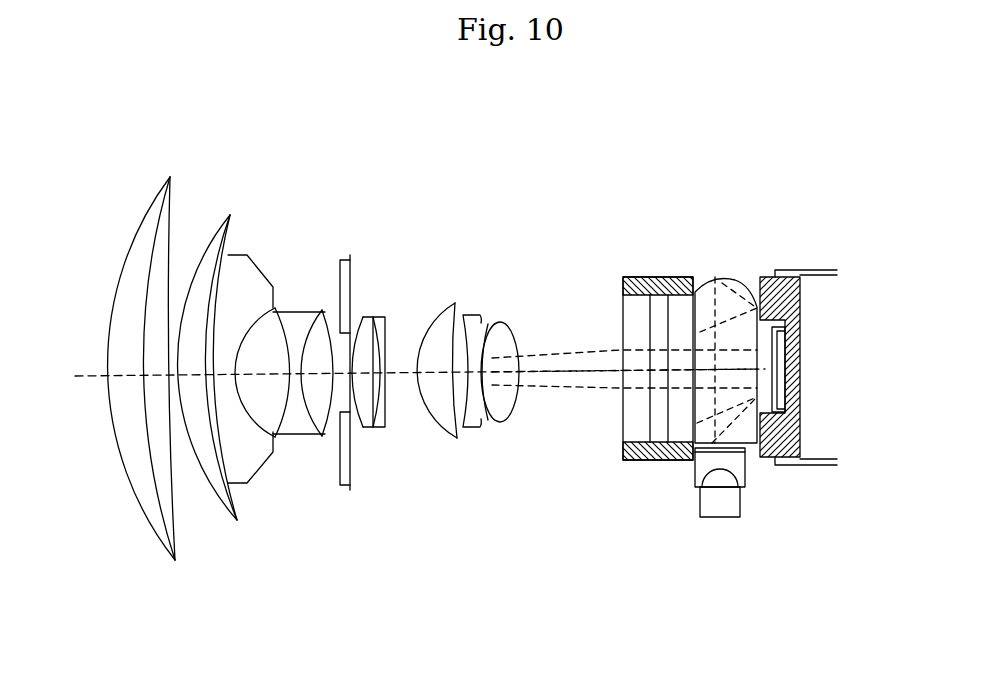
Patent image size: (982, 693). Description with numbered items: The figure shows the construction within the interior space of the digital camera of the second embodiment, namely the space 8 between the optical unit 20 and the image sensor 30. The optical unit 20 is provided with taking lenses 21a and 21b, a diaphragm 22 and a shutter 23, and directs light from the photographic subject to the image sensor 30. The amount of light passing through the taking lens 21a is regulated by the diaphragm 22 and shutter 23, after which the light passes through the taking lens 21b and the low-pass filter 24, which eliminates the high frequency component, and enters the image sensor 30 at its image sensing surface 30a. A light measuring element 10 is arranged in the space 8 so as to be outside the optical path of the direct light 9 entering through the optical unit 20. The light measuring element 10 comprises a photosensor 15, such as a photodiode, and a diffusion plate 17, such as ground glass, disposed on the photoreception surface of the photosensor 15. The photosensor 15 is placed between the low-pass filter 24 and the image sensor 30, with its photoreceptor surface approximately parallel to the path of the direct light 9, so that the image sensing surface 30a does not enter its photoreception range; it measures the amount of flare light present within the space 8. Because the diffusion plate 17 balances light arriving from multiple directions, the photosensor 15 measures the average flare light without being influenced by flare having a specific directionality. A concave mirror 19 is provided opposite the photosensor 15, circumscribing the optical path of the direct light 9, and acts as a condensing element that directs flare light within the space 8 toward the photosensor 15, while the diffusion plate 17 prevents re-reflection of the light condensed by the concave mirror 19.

The space 8 is at (626, 142).
The direct light 9 is at (85, 372).
The light measuring element 10 is at (641, 592).
The photosensor 15 is at (720, 517).
The diffusion plate 17 is at (695, 462).
The concave mirror 19 is at (732, 277).
The optical unit 20 is at (463, 121).
The taking lens 21a is at (238, 200).
The taking lens 21b is at (427, 199).
The diaphragm 22 is at (338, 470).
The shutter 23 is at (352, 457).
The low-pass filter 24 is at (658, 277).
The image sensor 30 is at (820, 367).
The image sensing surface 30a is at (760, 382).